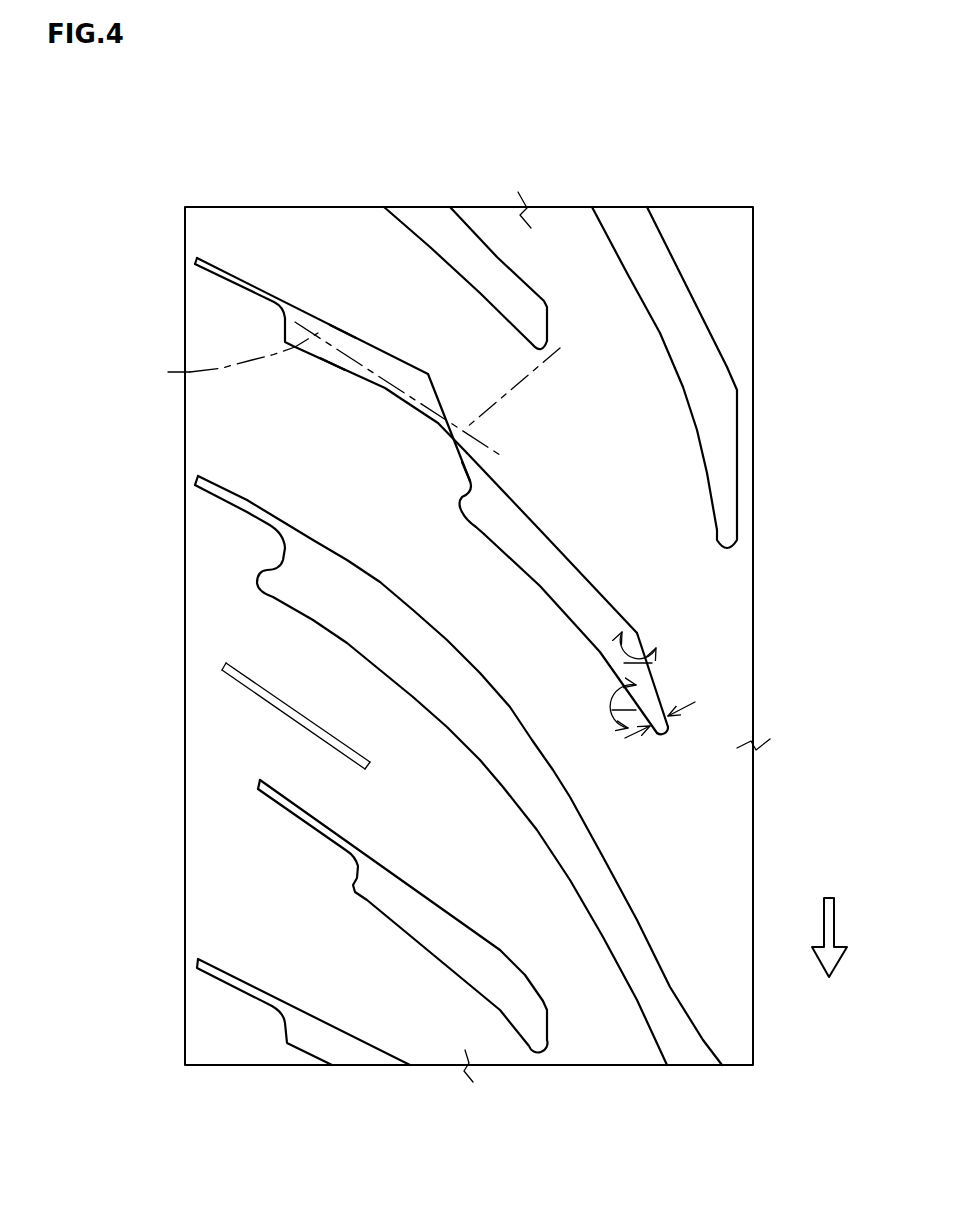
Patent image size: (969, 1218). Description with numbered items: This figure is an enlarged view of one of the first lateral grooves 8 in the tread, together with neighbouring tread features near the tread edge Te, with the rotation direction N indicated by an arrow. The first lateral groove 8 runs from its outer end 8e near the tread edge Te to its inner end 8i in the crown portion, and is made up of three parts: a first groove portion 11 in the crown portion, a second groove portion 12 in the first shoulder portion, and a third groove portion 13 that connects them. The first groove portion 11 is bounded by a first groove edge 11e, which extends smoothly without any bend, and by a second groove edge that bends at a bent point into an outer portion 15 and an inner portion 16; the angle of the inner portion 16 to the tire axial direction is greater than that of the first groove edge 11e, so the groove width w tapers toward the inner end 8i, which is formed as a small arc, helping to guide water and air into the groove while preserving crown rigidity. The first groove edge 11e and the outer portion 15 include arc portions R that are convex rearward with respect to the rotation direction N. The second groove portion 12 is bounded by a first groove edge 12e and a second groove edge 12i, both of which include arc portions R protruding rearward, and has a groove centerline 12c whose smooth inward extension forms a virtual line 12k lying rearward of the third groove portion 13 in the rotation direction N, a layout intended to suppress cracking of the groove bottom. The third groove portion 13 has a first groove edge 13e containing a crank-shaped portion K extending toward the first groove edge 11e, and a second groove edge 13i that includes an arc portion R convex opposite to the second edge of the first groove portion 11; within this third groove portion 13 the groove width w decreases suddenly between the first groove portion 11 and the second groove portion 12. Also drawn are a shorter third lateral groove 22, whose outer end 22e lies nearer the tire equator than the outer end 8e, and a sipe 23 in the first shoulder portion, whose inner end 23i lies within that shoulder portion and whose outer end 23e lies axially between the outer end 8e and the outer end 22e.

The tread edge Te is at (184, 234).
The first lateral groove 8 is at (466, 350).
The outer end of first lateral groove 8e is at (195, 260).
The inner end of first lateral groove 8i is at (670, 742).
The first groove portion 11 is at (592, 546).
The first groove edge of first groove portion 11e is at (580, 637).
The second groove portion 12 is at (290, 278).
The second groove edge of second groove portion 12i is at (343, 320).
The first groove edge of second groove portion 12e is at (339, 366).
The groove centerline of second groove portion 12c is at (214, 361).
The virtual line 12k is at (541, 378).
The third groove portion 13 is at (474, 374).
The second groove edge of third groove portion 13i is at (465, 450).
The first groove edge of third groove portion 13e is at (457, 453).
The outer portion 15 is at (598, 588).
The inner portion 16 is at (645, 655).
The third lateral groove 22 is at (376, 915).
The outer end of third lateral groove 22e is at (260, 784).
The sipe 23 is at (272, 709).
The outer end of sipe 23e is at (224, 663).
The inner end of sipe 23i is at (371, 766).
The crank-shaped portion K is at (459, 489).
The arc portion R is at (382, 345).
The groove width w is at (653, 700).
The rotation direction N is at (829, 953).